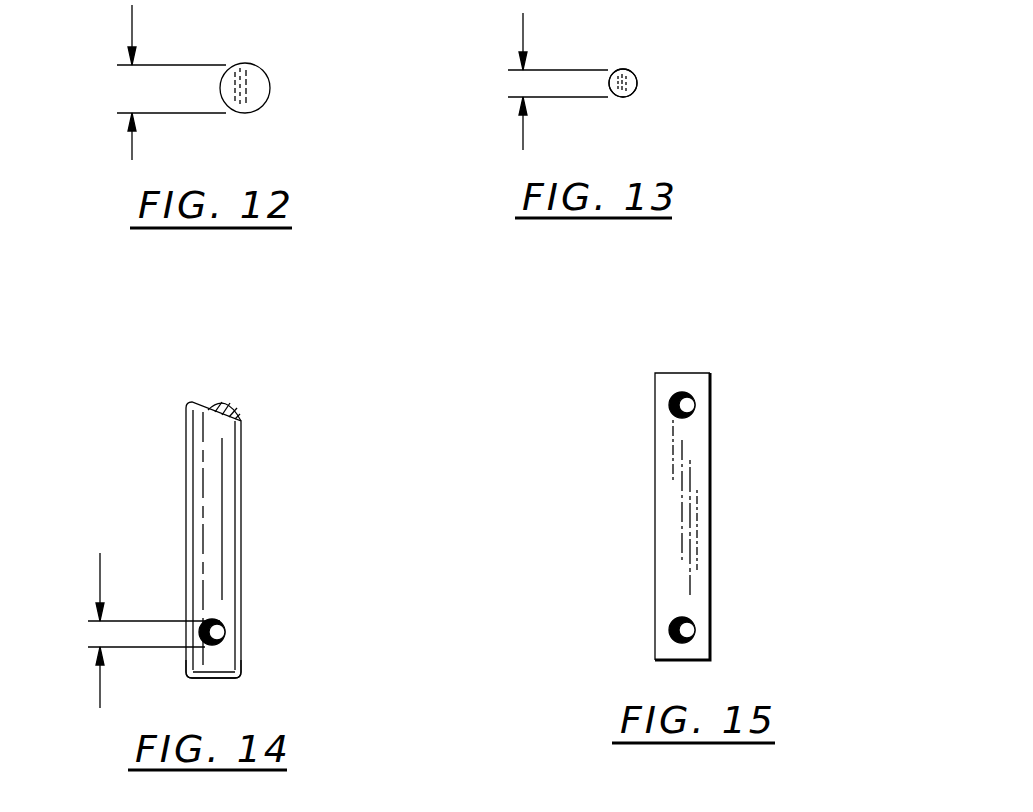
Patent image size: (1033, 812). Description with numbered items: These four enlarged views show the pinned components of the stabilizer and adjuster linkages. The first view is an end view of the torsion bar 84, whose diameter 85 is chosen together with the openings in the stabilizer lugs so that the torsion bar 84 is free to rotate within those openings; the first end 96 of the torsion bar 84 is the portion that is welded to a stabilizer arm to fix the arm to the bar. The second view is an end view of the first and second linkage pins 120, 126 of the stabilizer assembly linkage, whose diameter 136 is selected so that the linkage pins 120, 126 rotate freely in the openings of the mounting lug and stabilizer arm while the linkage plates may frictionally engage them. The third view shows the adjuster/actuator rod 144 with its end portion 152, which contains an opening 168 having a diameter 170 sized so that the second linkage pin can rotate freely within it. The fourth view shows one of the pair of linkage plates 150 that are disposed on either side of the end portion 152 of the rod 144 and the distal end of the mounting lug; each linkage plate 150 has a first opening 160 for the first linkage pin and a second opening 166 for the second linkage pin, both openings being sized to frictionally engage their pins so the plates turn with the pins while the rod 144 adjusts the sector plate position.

In FIG. 12, the torsion bar 84 is at (257, 64).
In FIG. 12, the diameter of the torsion bar 85 is at (132, 23).
In FIG. 12, the first end of the torsion bar 96 is at (257, 97).
In FIG. 13, the first linkage pin 120 is at (632, 72).
In FIG. 13, the second linkage pin 126 is at (623, 83).
In FIG. 13, the diameter of the linkage pins 136 is at (523, 30).
In FIG. 14, the adjuster/actuator rod 144 is at (241, 520).
In FIG. 14, the end portion of the adjuster/actuator rod 152 is at (241, 662).
In FIG. 14, the opening in the end portion of the adjuster/actuator rod 168 is at (225, 636).
In FIG. 14, the diameter of the opening in the rod end portion 170 is at (100, 578).
In FIG. 15, the linkage plates 150 is at (705, 508).
In FIG. 15, the first opening in the linkage plate 160 is at (690, 637).
In FIG. 15, the second opening in the linkage plate 166 is at (690, 411).